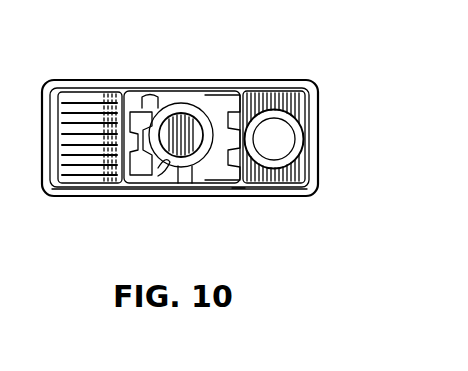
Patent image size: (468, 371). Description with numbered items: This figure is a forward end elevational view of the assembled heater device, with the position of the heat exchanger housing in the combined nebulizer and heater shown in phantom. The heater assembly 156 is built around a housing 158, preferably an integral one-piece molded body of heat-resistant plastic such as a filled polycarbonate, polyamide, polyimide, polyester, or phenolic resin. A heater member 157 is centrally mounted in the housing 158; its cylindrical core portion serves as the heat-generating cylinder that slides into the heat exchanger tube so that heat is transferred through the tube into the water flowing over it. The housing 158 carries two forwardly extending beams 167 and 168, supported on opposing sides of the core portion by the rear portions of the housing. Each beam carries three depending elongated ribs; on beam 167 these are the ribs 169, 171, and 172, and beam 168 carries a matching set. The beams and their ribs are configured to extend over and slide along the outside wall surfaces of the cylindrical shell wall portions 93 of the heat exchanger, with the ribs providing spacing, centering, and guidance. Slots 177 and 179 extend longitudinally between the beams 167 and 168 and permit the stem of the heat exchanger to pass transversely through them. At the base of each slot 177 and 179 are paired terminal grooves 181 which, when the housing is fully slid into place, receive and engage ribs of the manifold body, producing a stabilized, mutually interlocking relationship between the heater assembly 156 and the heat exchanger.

The heater assembly 156 is at (326, 108).
The housing 158 is at (43, 110).
The beam 167 is at (112, 118).
The rib 169 is at (147, 103).
The terminal grooves 181 is at (180, 99).
The slot 177 is at (193, 94).
The beam 168 is at (262, 95).
The rib 171 is at (150, 158).
The rib 172 is at (166, 162).
The slot 179 is at (191, 176).
The heater member 157 is at (200, 150).
The cylindrical shell wall portions 93 is at (238, 197).